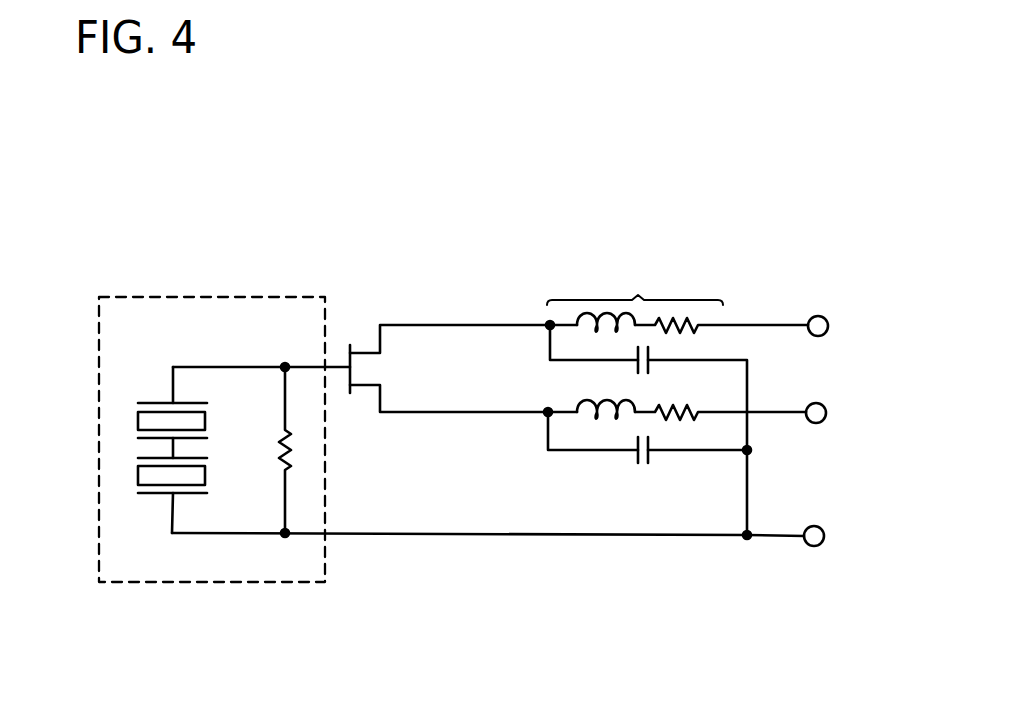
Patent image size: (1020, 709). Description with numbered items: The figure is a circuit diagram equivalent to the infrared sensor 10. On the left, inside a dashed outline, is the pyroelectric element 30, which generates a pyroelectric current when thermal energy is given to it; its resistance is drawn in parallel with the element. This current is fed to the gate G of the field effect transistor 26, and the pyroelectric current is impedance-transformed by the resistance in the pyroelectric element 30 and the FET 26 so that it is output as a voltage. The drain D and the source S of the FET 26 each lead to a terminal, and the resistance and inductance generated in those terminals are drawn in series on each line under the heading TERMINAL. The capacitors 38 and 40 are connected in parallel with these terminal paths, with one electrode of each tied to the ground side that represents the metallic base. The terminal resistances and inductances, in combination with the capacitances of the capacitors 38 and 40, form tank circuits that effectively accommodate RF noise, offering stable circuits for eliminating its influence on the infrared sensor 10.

The infrared sensor 10 is at (98, 173).
The pyroelectric element 30 is at (123, 267).
The field effect transistor 26 is at (365, 345).
The capacitor 38 is at (637, 366).
The capacitor 40 is at (633, 455).